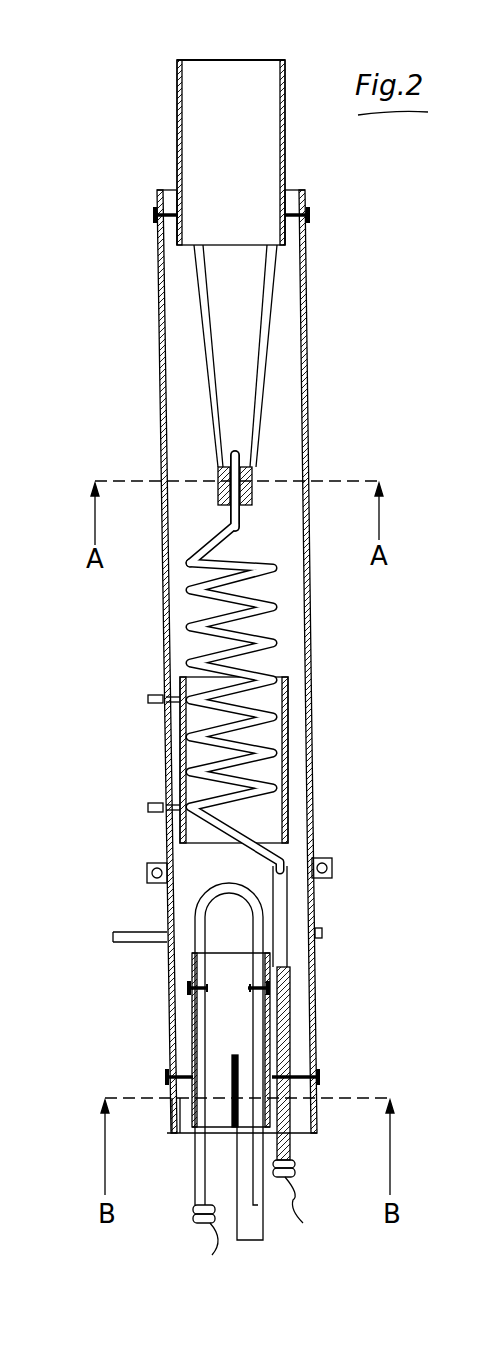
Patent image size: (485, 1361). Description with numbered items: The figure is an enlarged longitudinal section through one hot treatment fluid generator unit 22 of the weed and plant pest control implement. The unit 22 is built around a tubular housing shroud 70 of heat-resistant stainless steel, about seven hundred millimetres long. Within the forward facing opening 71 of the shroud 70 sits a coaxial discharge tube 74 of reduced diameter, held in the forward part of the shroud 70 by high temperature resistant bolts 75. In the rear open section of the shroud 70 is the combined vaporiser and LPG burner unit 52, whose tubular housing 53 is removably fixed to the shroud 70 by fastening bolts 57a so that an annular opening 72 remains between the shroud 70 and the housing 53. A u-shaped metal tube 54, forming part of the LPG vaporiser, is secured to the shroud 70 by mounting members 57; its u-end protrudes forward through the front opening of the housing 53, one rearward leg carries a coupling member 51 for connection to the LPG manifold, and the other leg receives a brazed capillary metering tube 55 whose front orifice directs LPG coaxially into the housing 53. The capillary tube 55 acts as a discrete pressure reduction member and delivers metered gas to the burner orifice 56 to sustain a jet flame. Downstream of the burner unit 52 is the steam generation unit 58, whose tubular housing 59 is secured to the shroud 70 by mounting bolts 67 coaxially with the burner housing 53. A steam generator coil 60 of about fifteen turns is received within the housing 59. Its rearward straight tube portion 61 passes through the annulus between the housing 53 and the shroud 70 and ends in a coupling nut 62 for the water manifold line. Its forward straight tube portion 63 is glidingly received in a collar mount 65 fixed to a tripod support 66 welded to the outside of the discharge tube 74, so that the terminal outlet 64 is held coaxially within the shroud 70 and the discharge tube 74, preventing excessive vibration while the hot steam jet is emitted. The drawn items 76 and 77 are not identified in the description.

The unit 22 is at (355, 645).
The coupling member 51 is at (215, 1228).
The combined vaporiser and LPG burner unit 52 is at (180, 1043).
The tubular housing 53 is at (192, 965).
The u-shaped metal tube 54 is at (198, 908).
The capillary metering tube 55 is at (233, 1058).
The burner orifice 56 is at (233, 1058).
The mounting members 57 is at (190, 995).
The fastening bolts 57a is at (165, 1082).
The steam generation unit 58 is at (298, 760).
The tubular housing 59 is at (290, 730).
The steam generator coil 60 is at (203, 746).
The rearward extending straight tube portion 61 is at (290, 1142).
The coupling nut 62 is at (293, 1180).
The forward extending straight tube portion 63 is at (242, 522).
The terminal outlet 64 is at (242, 458).
The collar mount 65 is at (218, 470).
The tripod support 66 is at (268, 368).
The mounting bolts 67 is at (157, 693).
The tubular housing shroud 70 is at (310, 680).
The forward facing opening 71 is at (292, 188).
The annular opening 72 is at (303, 1142).
The discharge tube 74 is at (178, 139).
The bolts 75 is at (310, 215).
The top wall 76 is at (255, 60).
The wire 77 is at (230, 247).